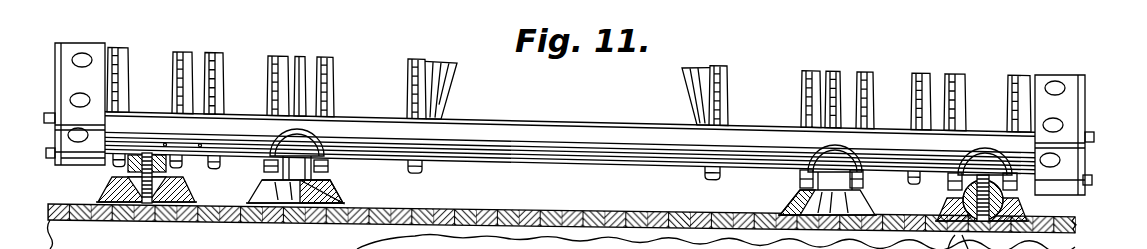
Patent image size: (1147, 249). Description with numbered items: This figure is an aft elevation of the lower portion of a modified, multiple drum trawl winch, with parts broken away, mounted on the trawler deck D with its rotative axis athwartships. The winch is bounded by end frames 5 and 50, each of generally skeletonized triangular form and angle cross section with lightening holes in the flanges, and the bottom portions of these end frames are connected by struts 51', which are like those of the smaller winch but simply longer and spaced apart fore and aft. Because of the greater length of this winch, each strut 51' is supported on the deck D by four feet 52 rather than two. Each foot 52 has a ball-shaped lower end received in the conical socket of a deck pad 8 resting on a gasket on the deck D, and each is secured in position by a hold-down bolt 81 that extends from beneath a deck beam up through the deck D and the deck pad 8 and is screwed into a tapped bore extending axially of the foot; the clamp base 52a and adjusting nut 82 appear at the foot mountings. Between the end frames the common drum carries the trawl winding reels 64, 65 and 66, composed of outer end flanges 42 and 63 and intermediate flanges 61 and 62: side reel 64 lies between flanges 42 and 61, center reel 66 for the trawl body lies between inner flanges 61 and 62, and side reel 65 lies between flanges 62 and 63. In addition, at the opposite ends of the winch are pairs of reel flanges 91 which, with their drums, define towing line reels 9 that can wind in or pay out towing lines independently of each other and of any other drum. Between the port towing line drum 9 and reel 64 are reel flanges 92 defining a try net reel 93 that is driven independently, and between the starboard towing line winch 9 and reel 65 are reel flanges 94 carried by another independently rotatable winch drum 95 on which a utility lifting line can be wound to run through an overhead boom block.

The end frame 5 is at (72, 78).
The end frame 50 is at (1085, 137).
The towing line reel 9 is at (569, 89).
The reel flange 91 is at (173, 97).
The reel flange 92 is at (268, 90).
The try net reel 93 is at (276, 80).
The reel flange 94 is at (915, 107).
The winch drum 95 is at (893, 99).
The side reel 64 is at (381, 73).
The side reel 65 is at (773, 101).
The center reel 66 is at (580, 105).
The strut 51' is at (570, 135).
The foot 52 is at (266, 168).
The clamp base 52a is at (136, 203).
The outer reel flange 42 is at (329, 172).
The inner reel flange 61 is at (423, 176).
The inner reel flange 62 is at (705, 181).
The outer reel flange 63 is at (800, 181).
The deck pad 8 is at (562, 199).
The hold-down bolt 81 is at (149, 204).
The adjusting nut 82 is at (947, 194).
The deck D is at (566, 205).